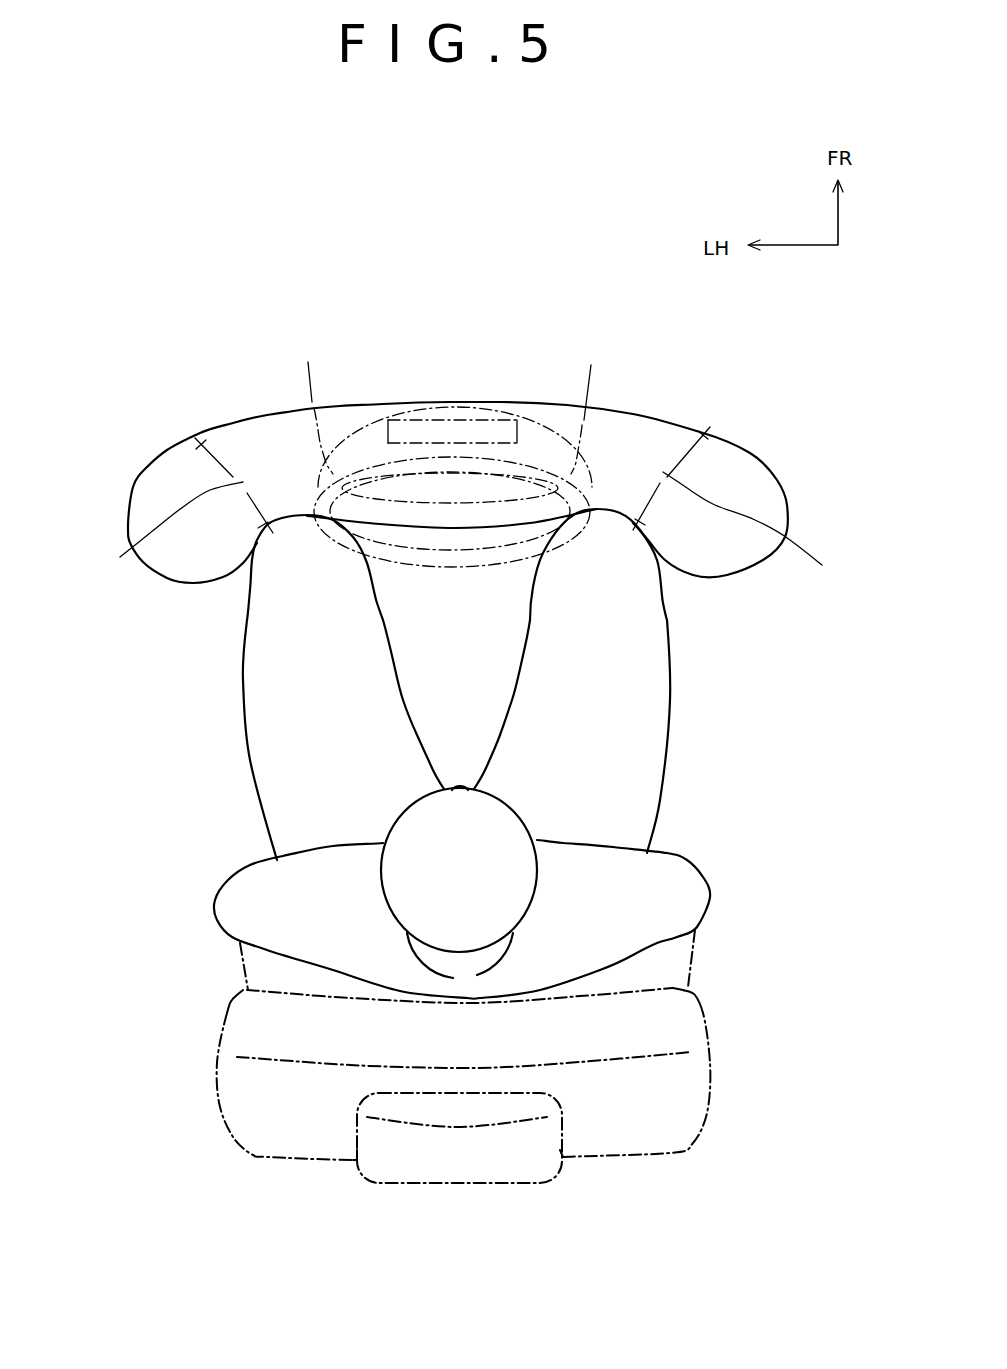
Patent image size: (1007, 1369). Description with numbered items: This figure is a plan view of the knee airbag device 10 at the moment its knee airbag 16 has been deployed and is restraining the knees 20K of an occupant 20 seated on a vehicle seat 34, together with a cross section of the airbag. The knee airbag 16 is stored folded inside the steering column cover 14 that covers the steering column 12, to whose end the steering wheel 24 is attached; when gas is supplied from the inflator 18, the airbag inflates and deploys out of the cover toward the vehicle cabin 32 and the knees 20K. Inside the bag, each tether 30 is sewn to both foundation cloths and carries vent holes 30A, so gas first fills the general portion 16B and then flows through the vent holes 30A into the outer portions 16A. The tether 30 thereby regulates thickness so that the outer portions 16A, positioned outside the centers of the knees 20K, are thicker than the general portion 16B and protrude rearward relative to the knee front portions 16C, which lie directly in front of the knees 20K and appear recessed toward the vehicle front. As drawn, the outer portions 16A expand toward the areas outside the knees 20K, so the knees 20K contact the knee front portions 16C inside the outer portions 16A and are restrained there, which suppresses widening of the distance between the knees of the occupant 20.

The knee airbag device 10 is at (269, 307).
The steering column 12 is at (293, 378).
The steering column cover 14 is at (593, 370).
The knee airbag 16 is at (760, 587).
The outer portions 16A is at (253, 412).
The general portion 16B is at (653, 410).
The knee front portions 16C is at (305, 527).
The inflator 18 is at (481, 444).
The occupant 20 is at (697, 856).
The knees 20K is at (293, 517).
The steering wheel 24 is at (413, 565).
The tether 30 is at (241, 465).
The vent holes 30A is at (112, 572).
The vehicle cabin 32 is at (476, 656).
The vehicle seat 34 is at (708, 1033).